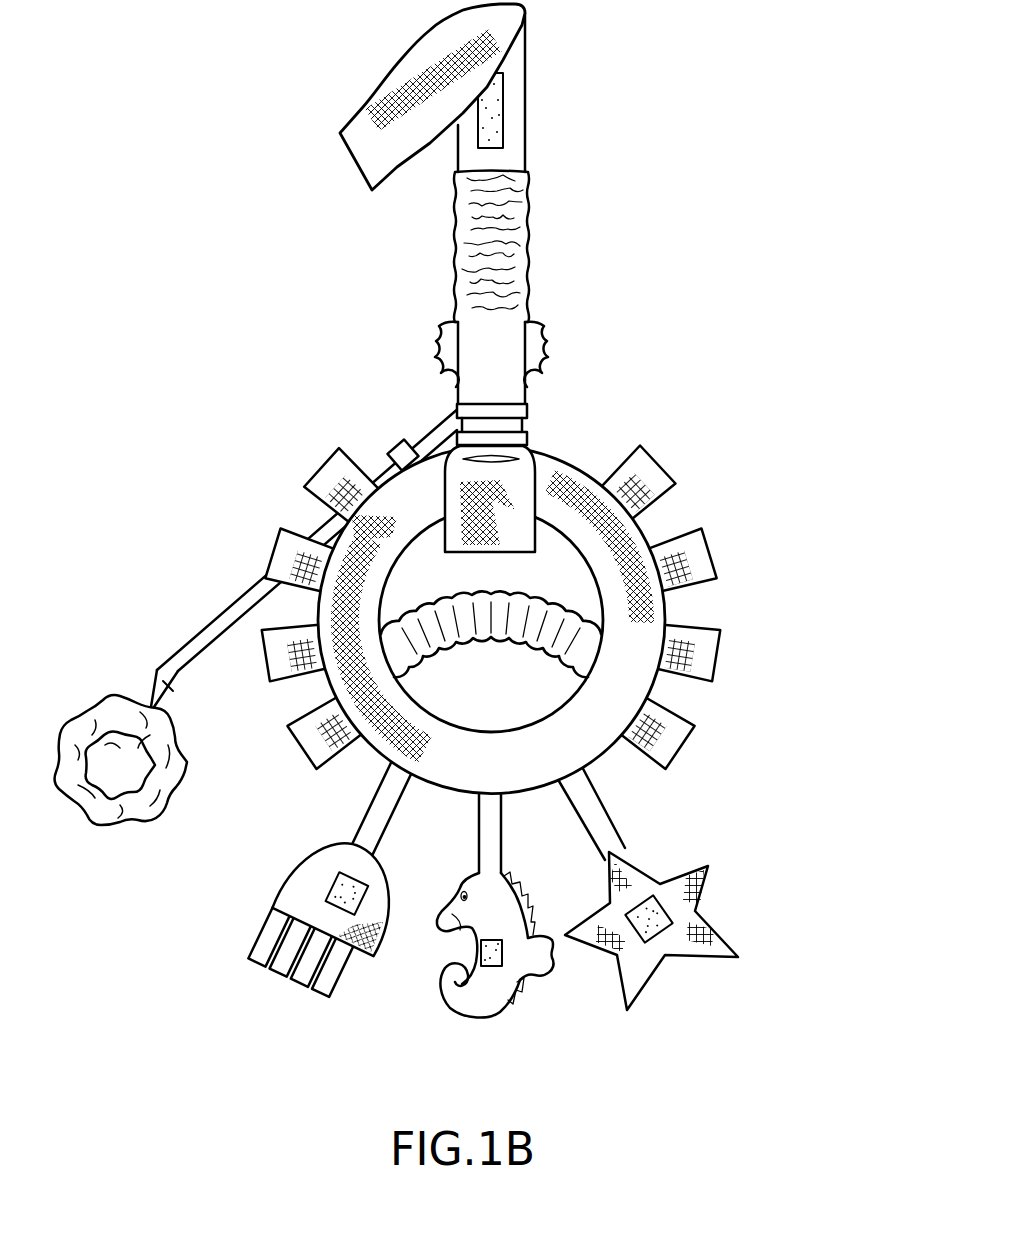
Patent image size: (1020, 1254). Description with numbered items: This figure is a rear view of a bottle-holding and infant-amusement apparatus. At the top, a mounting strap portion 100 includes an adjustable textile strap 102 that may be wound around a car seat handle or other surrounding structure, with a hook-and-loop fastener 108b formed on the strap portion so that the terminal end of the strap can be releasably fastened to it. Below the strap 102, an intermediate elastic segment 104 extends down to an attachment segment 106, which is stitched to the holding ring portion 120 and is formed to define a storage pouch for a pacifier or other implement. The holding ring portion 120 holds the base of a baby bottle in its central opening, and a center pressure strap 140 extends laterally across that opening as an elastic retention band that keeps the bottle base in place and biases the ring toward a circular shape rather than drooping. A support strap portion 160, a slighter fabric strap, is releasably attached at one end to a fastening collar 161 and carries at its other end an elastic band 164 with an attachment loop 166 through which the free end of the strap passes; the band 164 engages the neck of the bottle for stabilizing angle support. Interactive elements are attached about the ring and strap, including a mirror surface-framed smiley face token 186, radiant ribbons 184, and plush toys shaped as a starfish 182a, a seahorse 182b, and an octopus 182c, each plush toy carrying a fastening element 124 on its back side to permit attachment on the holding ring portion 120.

The mounting strap portion 100 is at (515, 153).
The adjustable textile strap 102 is at (400, 88).
The intermediate elastic segment 104 is at (513, 227).
The attachment segment 106 is at (523, 473).
The fastener 108b is at (497, 100).
The holding ring portion 120 is at (630, 541).
The fastening element 124 is at (330, 893).
The center pressure strap 140 is at (488, 632).
The support strap portion 160 is at (230, 612).
The fastening collar 161 is at (528, 417).
The band 164 is at (122, 823).
The attachment loop 166 is at (147, 690).
The starfish 182a is at (703, 877).
The seahorse 182b is at (460, 997).
The octopus 182c is at (330, 863).
The radiant ribbons 184 is at (337, 462).
The mirror surface-framed smiley face token 186 is at (543, 333).